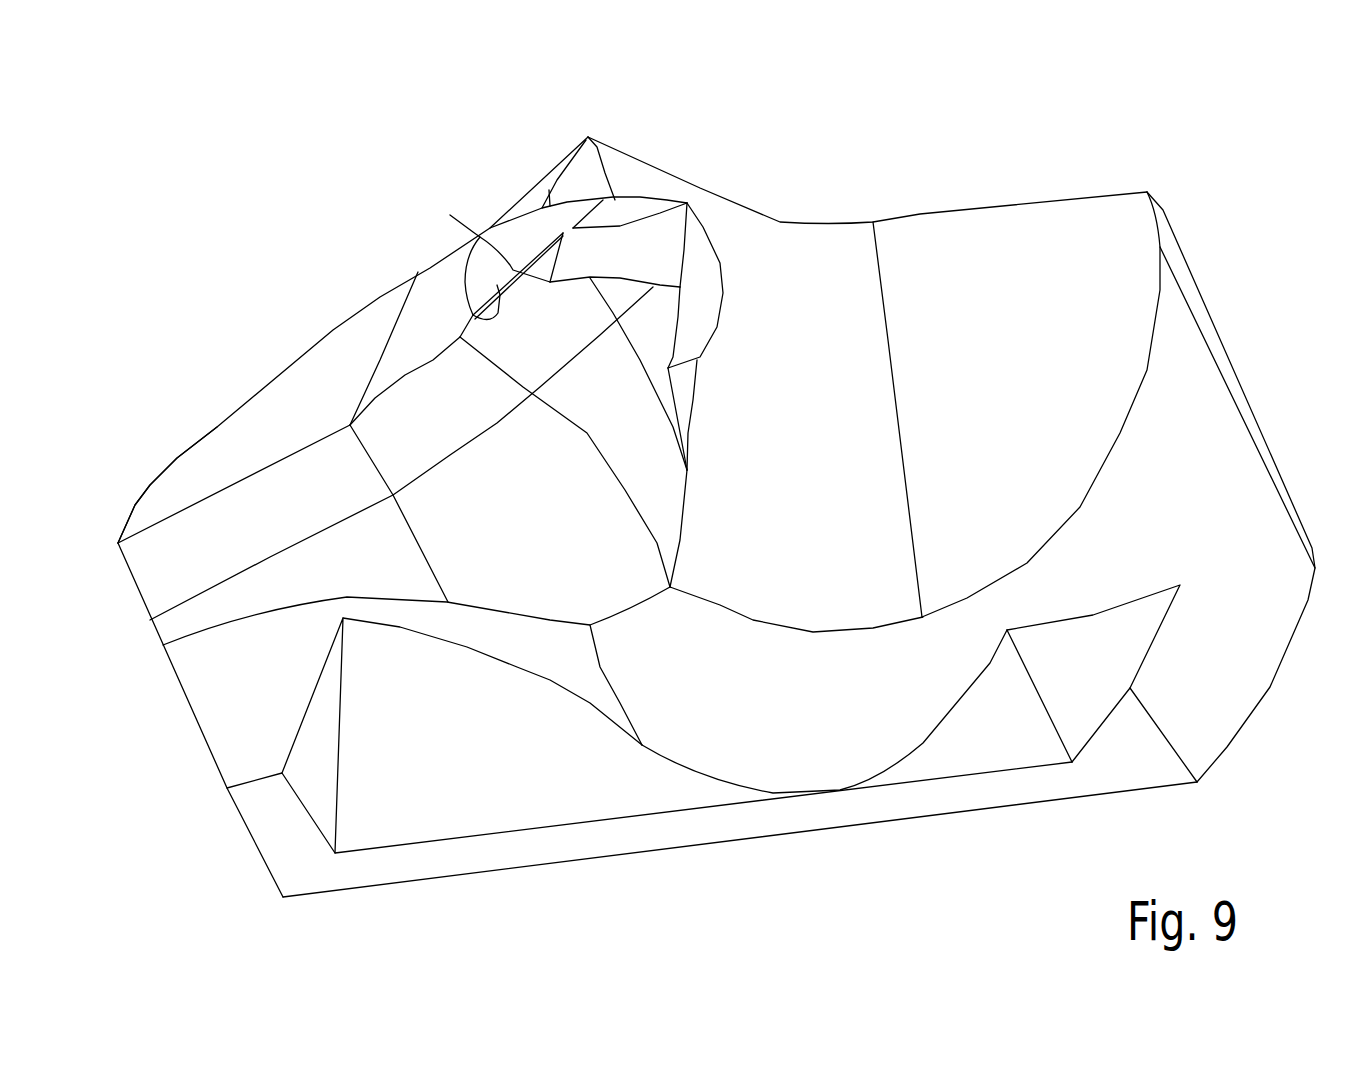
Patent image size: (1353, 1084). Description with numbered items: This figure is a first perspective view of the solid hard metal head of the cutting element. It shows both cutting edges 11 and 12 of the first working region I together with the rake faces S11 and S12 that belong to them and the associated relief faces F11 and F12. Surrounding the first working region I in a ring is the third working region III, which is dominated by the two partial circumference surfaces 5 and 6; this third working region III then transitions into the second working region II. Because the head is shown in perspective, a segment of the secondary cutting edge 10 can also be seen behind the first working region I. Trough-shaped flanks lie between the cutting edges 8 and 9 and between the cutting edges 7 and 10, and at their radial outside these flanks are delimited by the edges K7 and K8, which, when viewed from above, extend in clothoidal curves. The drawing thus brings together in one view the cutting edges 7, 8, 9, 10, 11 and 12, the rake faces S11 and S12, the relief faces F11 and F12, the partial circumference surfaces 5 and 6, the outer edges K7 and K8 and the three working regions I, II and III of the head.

The first working region I is at (557, 156).
The second working region II is at (987, 280).
The third working region III is at (740, 273).
The partial circumference surface 5 is at (463, 263).
The partial circumference surface 6 is at (707, 283).
The cutting edge 7 is at (225, 490).
The cutting edge 8 is at (922, 213).
The cutting edge 9 is at (680, 540).
The secondary cutting edge 10 is at (556, 184).
The cutting edge 11 is at (473, 315).
The cutting edge 12 is at (643, 200).
The relief face F11 is at (450, 215).
The relief face F12 is at (665, 200).
The rake face S11 is at (547, 328).
The rake face S12 is at (636, 187).
The edge K7 is at (177, 458).
The edge K8 is at (1147, 370).